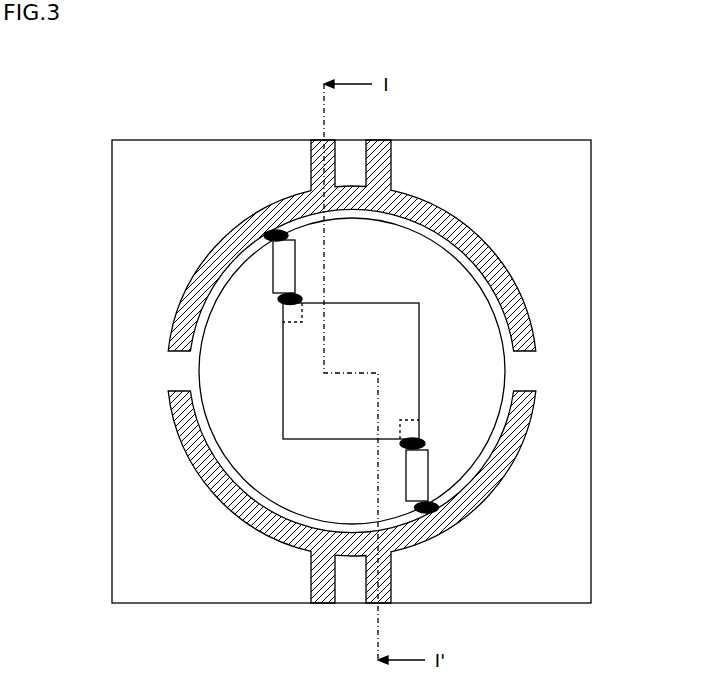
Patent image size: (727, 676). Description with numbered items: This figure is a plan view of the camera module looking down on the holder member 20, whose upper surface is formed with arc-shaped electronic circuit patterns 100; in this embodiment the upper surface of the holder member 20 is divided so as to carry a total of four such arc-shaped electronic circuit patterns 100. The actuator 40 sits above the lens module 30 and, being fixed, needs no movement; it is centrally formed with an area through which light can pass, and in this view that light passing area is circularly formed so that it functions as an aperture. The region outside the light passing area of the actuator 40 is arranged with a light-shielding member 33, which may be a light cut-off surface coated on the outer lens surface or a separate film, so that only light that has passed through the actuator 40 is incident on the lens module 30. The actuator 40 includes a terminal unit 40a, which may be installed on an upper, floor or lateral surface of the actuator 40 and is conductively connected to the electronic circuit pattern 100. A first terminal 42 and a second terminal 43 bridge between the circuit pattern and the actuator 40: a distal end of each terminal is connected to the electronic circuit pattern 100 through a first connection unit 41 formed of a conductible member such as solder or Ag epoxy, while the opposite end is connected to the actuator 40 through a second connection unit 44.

The electronic circuit pattern 100 is at (378, 340).
The holder member 20 is at (535, 150).
The lens module 30 is at (478, 284).
The light-shielding member 33 is at (281, 475).
The actuator 40 is at (417, 357).
The terminal unit 40a is at (297, 322).
The first connection unit 41 is at (280, 230).
The first terminal 42 is at (277, 263).
The second terminal 43 is at (425, 446).
The second connection unit 44 is at (282, 297).